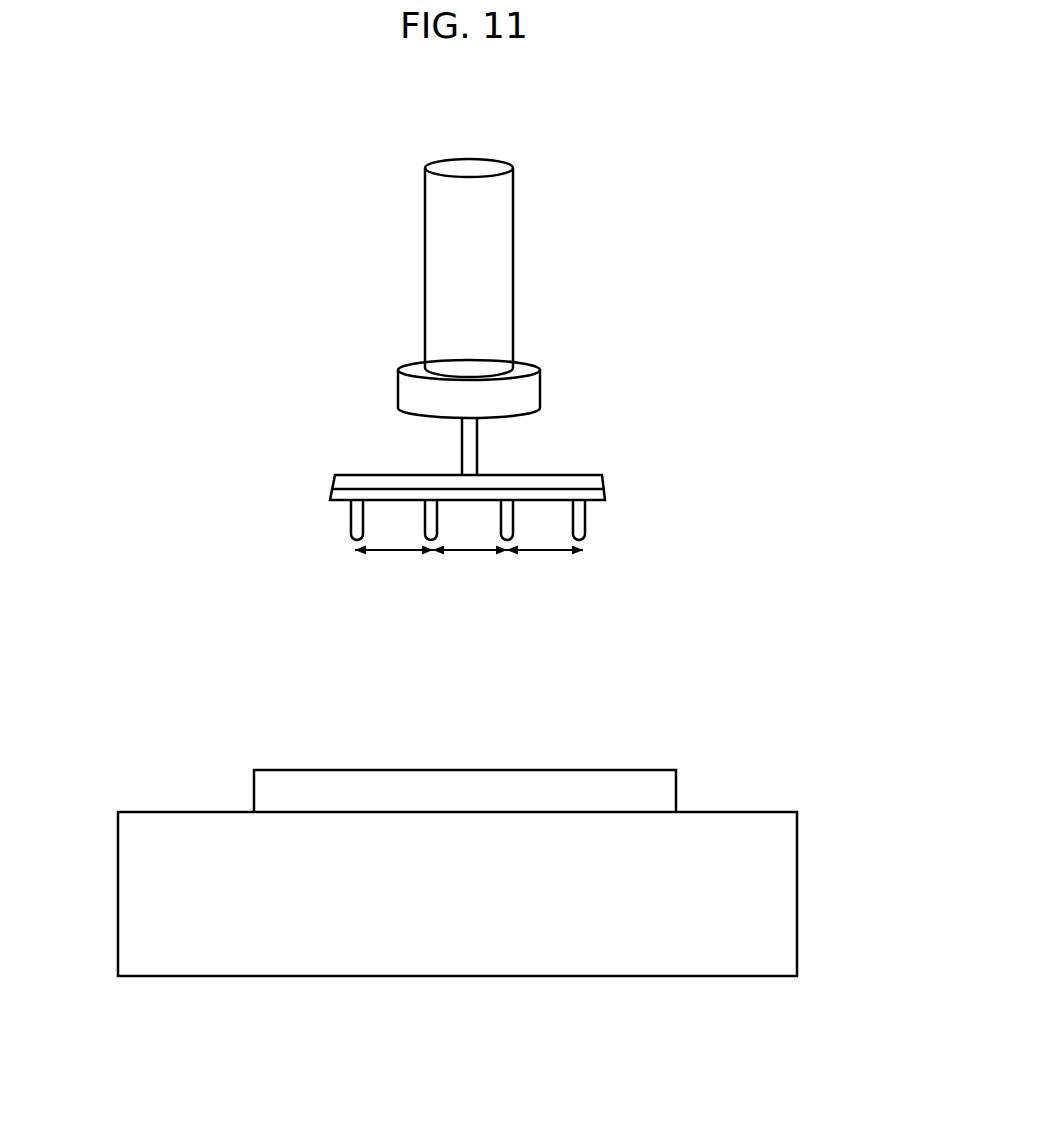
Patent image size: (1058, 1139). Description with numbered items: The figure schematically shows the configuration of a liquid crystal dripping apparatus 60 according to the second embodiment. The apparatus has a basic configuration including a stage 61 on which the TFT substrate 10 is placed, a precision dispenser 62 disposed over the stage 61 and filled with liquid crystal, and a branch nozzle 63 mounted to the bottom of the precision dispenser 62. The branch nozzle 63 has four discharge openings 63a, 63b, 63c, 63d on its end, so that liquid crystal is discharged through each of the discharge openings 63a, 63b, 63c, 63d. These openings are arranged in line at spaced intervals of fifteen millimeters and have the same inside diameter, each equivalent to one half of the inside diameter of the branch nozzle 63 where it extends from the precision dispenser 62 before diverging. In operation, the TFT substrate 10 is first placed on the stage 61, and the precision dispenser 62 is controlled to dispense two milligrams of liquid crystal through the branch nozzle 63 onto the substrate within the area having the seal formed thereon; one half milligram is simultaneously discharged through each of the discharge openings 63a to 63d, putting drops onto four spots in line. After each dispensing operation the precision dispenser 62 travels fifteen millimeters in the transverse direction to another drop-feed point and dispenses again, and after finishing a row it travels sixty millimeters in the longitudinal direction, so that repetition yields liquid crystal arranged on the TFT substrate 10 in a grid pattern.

The liquid crystal dripping apparatus 60 is at (834, 100).
The precision dispenser 62 is at (467, 168).
The branch nozzle 63 is at (478, 448).
The discharge opening 63a is at (350, 513).
The discharge opening 63b is at (427, 532).
The discharge opening 63c is at (513, 522).
The discharge opening 63d is at (590, 513).
The TFT substrate 10 is at (613, 780).
The stage 61 is at (276, 963).